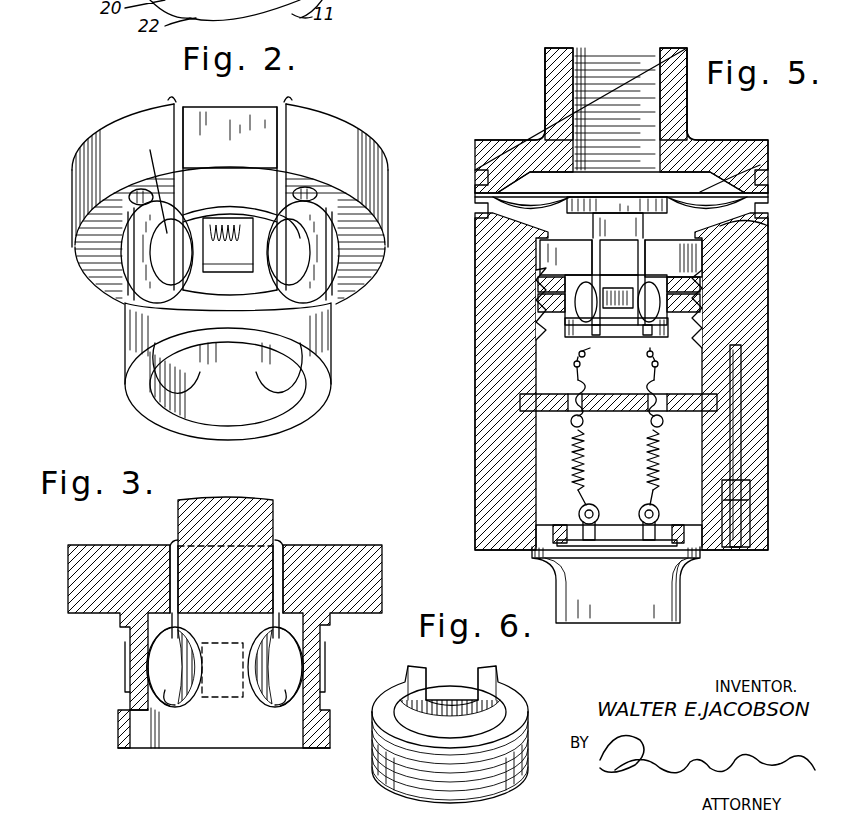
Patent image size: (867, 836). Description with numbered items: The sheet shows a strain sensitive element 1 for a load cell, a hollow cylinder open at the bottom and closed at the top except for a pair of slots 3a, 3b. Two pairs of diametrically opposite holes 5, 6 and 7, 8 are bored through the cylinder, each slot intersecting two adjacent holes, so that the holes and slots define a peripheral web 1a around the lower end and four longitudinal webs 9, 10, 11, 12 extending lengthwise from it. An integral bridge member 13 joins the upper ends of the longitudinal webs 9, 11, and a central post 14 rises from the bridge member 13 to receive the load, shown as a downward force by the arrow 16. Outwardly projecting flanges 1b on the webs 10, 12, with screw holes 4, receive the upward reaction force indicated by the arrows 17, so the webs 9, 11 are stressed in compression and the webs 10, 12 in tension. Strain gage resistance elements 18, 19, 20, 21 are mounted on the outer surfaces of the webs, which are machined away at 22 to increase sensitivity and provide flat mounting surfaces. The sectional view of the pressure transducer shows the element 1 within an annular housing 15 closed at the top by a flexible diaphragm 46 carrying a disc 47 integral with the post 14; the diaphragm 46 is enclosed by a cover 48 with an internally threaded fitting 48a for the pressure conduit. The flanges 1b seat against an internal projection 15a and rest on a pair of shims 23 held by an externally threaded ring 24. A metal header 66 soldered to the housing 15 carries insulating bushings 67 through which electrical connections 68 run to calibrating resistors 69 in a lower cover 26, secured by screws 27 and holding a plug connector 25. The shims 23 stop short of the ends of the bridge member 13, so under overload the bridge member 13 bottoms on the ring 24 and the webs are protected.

In FIG. 2, the strain sensitive element 1 is at (398, 185).
In FIG. 3, the strain sensitive element 1 is at (371, 519).
In FIG. 5, the strain sensitive element 1 is at (557, 354).
In FIG. 2, the peripheral web 1a is at (285, 428).
In FIG. 3, the peripheral web 1a is at (224, 728).
In FIG. 5, the peripheral web 1a is at (565, 328).
In FIG. 2, the outwardly projecting flanges 1b is at (335, 135).
In FIG. 3, the outwardly projecting flanges 1b is at (68, 590).
In FIG. 5, the outwardly projecting flanges 1b is at (540, 258).
In FIG. 2, the slot 3a is at (176, 103).
In FIG. 3, the slot 3a is at (170, 546).
In FIG. 2, the slot 3b is at (288, 103).
In FIG. 3, the slot 3b is at (284, 550).
In FIG. 3, the screw holes 4 is at (100, 668).
In FIG. 2, the hole 5 is at (297, 375).
In FIG. 3, the hole 5 is at (285, 704).
In FIG. 2, the hole 6 is at (152, 160).
In FIG. 2, the hole 7 is at (165, 375).
In FIG. 3, the hole 7 is at (156, 748).
In FIG. 2, the hole 8 is at (300, 232).
In FIG. 2, the longitudinal web 9 is at (236, 411).
In FIG. 3, the longitudinal web 9 is at (231, 633).
In FIG. 2, the longitudinal web 10 is at (140, 275).
In FIG. 3, the longitudinal web 10 is at (138, 700).
In FIG. 2, the longitudinal web 11 is at (252, 282).
In FIG. 2, the longitudinal web 12 is at (320, 285).
In FIG. 3, the longitudinal web 12 is at (318, 705).
In FIG. 2, the bridge member 13 is at (215, 118).
In FIG. 3, the bridge member 13 is at (200, 528).
In FIG. 5, the bridge member 13 is at (630, 265).
In FIG. 3, the center post 14 is at (245, 500).
In FIG. 5, the center post 14 is at (582, 232).
In FIG. 5, the housing 15 is at (760, 335).
In FIG. 5, the internal projection 15a is at (768, 228).
In FIG. 3, the arrow 16 is at (232, 482).
In FIG. 3, the arrows 17 is at (98, 622).
In FIG. 3, the strain gage resistance element 18 is at (216, 697).
In FIG. 3, the strain gage resistance element 19 is at (127, 655).
In FIG. 2, the strain gage resistance element 20 is at (218, 275).
In FIG. 3, the strain gage resistance element 21 is at (325, 656).
In FIG. 3, the machined-away surface 22 is at (125, 712).
In FIG. 6, the shims 23 is at (412, 676).
In FIG. 5, the shims 23 is at (540, 283).
In FIG. 6, the ring 24 is at (518, 777).
In FIG. 5, the ring 24 is at (540, 304).
In FIG. 5, the electrical plug connector 25 is at (680, 602).
In FIG. 5, the cover 26 is at (760, 464).
In FIG. 5, the screws 27 is at (745, 438).
In FIG. 5, the flexible diaphragm 46 is at (765, 168).
In FIG. 5, the disc 47 is at (680, 195).
In FIG. 5, the cover 48 is at (512, 148).
In FIG. 5, the fitting 48a is at (674, 58).
In FIG. 5, the metal header 66 is at (717, 398).
In FIG. 5, the insulating bushings 67 is at (598, 383).
In FIG. 5, the electrical connections 68 is at (645, 352).
In FIG. 5, the calibrating resistors 69 is at (640, 462).